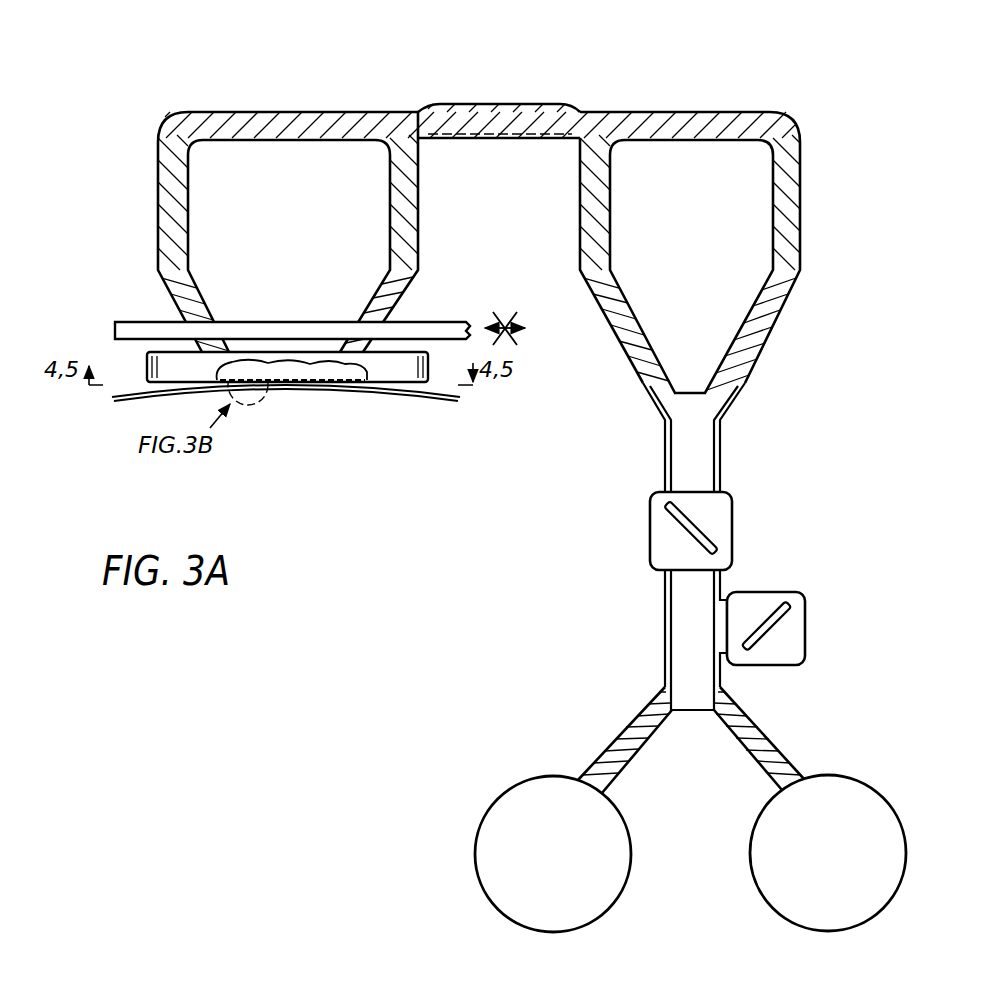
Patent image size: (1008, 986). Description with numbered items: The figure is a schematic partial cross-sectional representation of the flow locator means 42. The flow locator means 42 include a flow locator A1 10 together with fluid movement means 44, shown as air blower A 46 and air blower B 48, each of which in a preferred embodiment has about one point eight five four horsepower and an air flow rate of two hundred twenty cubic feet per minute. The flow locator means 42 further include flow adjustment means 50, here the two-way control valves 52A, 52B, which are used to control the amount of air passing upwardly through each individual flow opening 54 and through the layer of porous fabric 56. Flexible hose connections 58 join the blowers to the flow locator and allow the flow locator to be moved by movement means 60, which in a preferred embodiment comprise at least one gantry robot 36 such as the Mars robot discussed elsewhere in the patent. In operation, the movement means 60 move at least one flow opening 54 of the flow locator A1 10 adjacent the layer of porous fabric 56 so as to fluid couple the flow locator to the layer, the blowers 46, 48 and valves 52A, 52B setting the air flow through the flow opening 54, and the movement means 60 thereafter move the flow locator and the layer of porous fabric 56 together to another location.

The flow locator A1 10 is at (150, 350).
The gantry robot 36 is at (453, 322).
The flow locator means 42 is at (327, 56).
The fluid movement means 44 is at (859, 750).
The air blower A 46 is at (497, 800).
The air blower B 48 is at (851, 931).
The flow adjustment means 50 is at (819, 420).
The two-way control valve 52A is at (732, 512).
The two-way control valve 52B is at (805, 621).
The flow opening 54 is at (255, 402).
The layer of porous fabric 56 is at (416, 389).
The flexible hose connections 58 is at (737, 110).
The movement means 60 is at (526, 339).